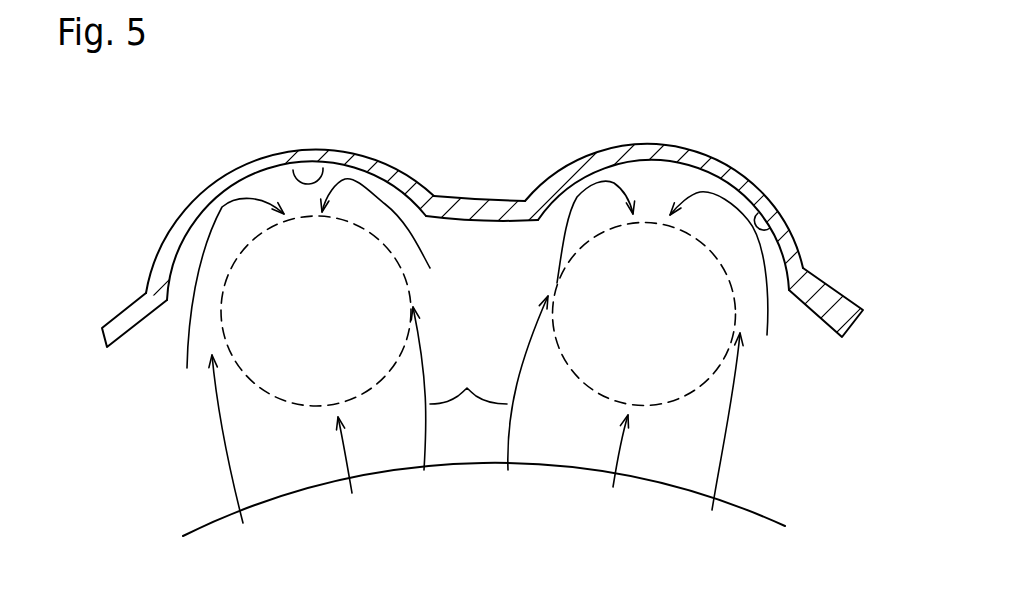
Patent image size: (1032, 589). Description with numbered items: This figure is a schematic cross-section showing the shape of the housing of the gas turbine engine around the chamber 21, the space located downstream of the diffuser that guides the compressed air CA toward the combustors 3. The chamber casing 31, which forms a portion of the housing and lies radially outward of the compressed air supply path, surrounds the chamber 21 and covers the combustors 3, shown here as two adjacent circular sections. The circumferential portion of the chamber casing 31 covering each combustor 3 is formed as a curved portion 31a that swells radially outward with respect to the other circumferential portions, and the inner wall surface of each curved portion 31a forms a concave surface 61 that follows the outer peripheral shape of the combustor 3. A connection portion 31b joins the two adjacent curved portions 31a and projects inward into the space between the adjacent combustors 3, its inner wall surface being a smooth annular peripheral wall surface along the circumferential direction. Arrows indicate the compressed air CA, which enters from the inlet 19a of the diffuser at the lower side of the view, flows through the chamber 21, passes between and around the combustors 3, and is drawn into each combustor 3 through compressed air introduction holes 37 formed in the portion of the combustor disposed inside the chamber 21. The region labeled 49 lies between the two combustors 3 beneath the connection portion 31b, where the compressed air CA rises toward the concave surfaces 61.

The chamber casing 31 is at (120, 310).
The curved portion 31a is at (294, 150).
The connection portion 31b is at (487, 197).
The concave surface 61 is at (302, 167).
The compressed air introduction holes 37 is at (407, 290).
The central passage 49 is at (493, 335).
The compressed air CA is at (468, 380).
The chamber 21 is at (826, 344).
The combustor 3 is at (262, 390).
The inlet of the diffuser 19a is at (757, 512).